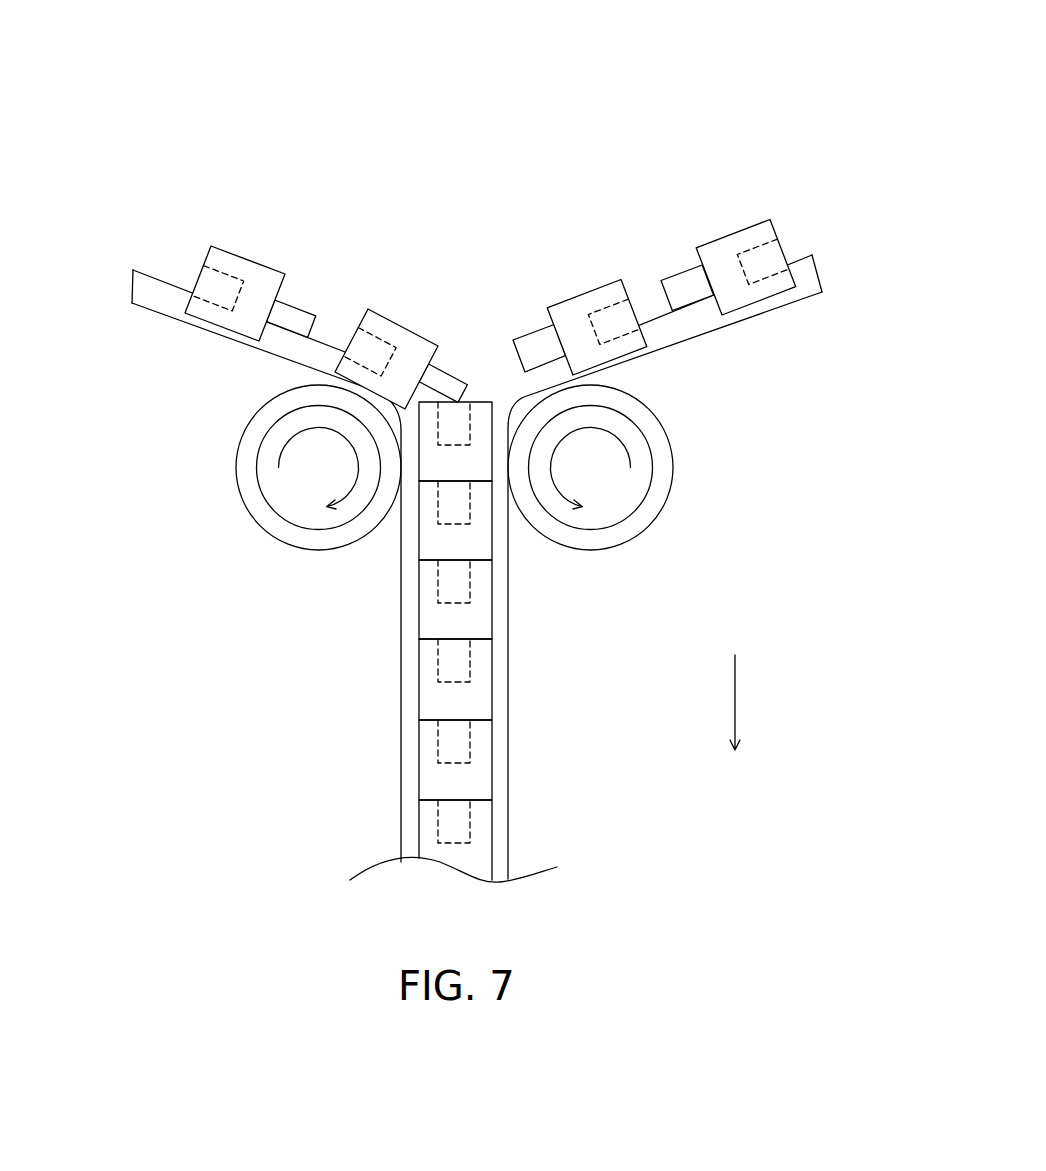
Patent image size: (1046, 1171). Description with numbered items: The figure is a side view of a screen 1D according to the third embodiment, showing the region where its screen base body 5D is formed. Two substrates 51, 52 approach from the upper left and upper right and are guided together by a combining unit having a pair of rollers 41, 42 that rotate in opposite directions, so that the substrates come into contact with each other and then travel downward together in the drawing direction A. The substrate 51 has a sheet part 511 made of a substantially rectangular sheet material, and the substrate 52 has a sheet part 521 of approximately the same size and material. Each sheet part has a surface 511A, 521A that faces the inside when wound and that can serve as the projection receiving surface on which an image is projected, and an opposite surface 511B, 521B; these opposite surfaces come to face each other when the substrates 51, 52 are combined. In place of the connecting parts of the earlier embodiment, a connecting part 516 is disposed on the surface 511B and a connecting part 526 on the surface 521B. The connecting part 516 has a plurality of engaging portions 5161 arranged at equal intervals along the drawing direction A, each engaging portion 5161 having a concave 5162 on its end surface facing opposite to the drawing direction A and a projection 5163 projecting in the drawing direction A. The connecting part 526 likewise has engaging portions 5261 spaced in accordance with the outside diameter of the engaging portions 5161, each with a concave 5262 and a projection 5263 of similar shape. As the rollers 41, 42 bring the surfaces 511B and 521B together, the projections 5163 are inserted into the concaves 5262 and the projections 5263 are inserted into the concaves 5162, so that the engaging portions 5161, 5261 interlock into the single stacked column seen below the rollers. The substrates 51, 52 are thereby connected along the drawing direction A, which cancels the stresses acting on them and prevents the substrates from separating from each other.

The screen 1D is at (752, 100).
The substrate 51 is at (152, 180).
The substrate 52 is at (778, 150).
The sheet part 511 is at (191, 318).
The surface 511A is at (133, 306).
The surface 511B is at (164, 270).
The connecting part 516 is at (345, 165).
The engaging portion 5161 is at (392, 302).
The concave 5162 is at (206, 265).
The projection 5163 is at (295, 325).
The sheet part 521 is at (737, 316).
The surface 521A is at (778, 308).
The surface 521B is at (680, 310).
The connecting part 526 is at (614, 165).
The engaging portion 5261 is at (660, 255).
The concave 5262 is at (762, 240).
The projection 5263 is at (519, 345).
The roller 41 is at (265, 467).
The roller 42 is at (650, 467).
The screen base body 5D is at (490, 563).
The drawing direction A is at (737, 702).